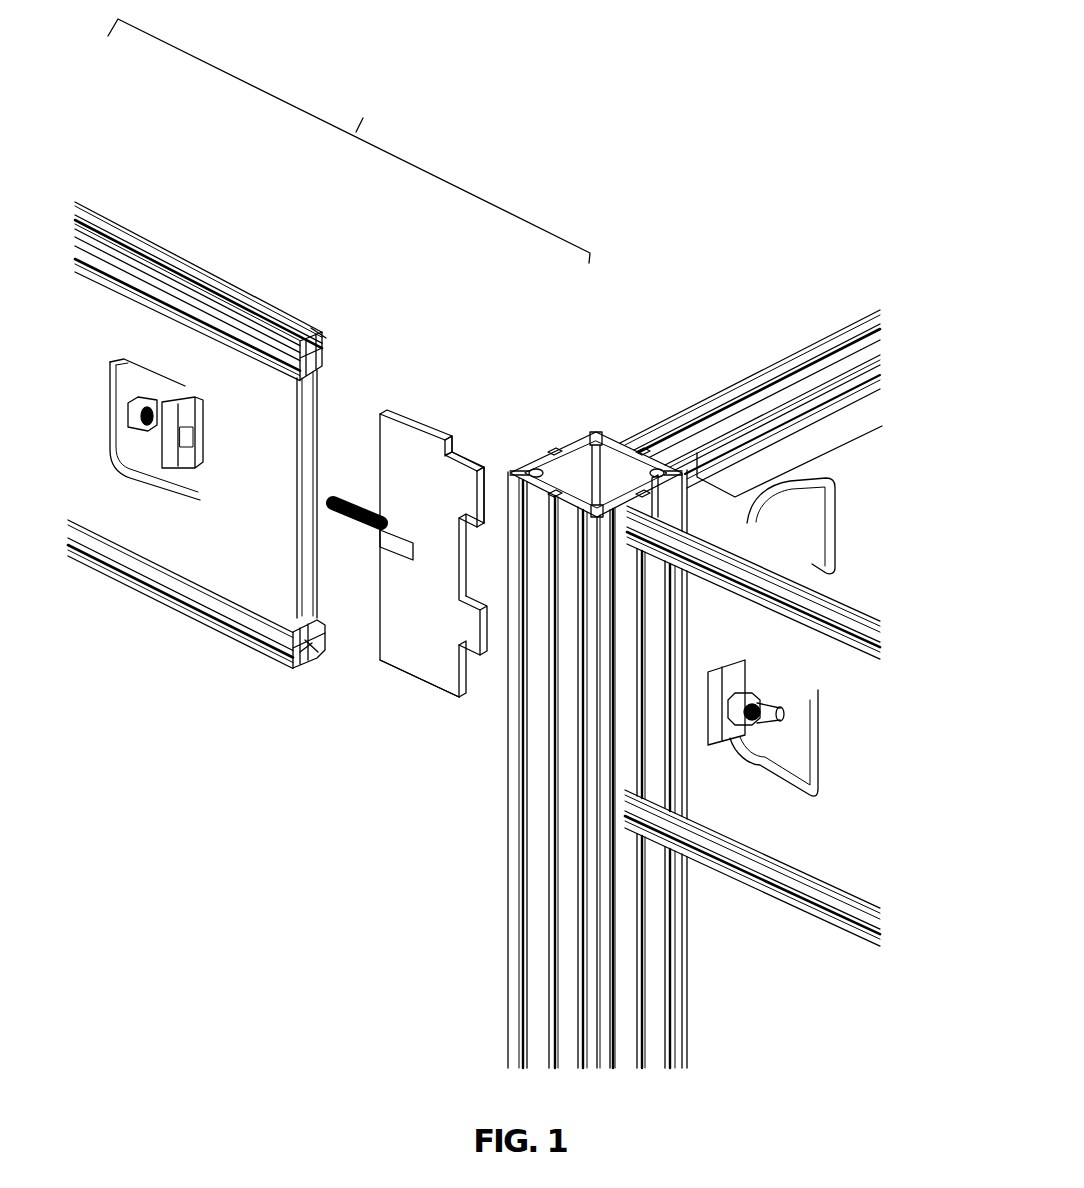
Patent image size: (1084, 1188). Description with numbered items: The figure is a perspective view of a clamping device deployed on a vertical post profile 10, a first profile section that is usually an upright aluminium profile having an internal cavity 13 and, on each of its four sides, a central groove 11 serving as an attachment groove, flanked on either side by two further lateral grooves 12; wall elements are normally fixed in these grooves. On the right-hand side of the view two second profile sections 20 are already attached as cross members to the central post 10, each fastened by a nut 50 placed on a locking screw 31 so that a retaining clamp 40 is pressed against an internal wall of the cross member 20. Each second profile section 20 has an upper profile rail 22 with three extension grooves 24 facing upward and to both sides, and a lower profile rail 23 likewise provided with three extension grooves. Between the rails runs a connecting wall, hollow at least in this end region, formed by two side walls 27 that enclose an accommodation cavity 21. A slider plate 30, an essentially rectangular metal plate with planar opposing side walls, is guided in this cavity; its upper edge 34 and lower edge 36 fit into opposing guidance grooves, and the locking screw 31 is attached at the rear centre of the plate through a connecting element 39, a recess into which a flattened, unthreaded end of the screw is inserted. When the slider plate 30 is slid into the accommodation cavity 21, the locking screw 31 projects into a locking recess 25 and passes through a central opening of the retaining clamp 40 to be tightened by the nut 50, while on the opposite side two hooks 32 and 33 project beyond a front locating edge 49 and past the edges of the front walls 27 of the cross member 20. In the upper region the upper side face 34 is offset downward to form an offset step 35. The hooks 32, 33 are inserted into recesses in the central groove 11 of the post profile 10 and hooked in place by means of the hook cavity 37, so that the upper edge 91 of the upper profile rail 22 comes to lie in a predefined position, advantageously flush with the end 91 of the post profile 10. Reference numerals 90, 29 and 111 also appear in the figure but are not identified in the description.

The post profile 10 is at (545, 693).
The central groove 11 is at (558, 953).
The lateral grooves 12 is at (578, 1043).
The internal cavity 13 is at (596, 417).
The corner slot 111 is at (553, 453).
The upper edge 91 is at (580, 450).
The second profile section 20 is at (221, 570).
The accommodation cavity 21 is at (313, 633).
The upper profile rail 22 is at (318, 341).
The lower profile rail 23 is at (313, 653).
The extension grooves 24 is at (256, 325).
The locking recess 25 is at (145, 485).
The side walls 27 is at (280, 408).
The lower rail end 29 is at (293, 600).
The slider plate 30 is at (431, 560).
The locking screw 31 is at (343, 497).
The hook 32 is at (480, 468).
The hook 33 is at (467, 632).
The upper edge 34 is at (432, 428).
The offset step 35 is at (465, 460).
The lower edge 36 is at (423, 687).
The hook cavity 37 is at (470, 530).
The connecting element 39 is at (382, 543).
The retaining clamp 40 is at (187, 410).
The front locating edge 49 is at (487, 625).
The nut 50 is at (138, 398).
The panel assembly 90 is at (97, 204).